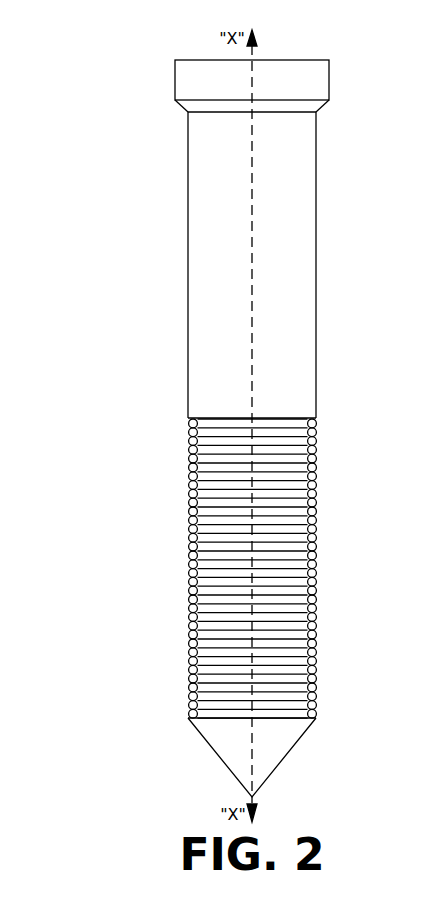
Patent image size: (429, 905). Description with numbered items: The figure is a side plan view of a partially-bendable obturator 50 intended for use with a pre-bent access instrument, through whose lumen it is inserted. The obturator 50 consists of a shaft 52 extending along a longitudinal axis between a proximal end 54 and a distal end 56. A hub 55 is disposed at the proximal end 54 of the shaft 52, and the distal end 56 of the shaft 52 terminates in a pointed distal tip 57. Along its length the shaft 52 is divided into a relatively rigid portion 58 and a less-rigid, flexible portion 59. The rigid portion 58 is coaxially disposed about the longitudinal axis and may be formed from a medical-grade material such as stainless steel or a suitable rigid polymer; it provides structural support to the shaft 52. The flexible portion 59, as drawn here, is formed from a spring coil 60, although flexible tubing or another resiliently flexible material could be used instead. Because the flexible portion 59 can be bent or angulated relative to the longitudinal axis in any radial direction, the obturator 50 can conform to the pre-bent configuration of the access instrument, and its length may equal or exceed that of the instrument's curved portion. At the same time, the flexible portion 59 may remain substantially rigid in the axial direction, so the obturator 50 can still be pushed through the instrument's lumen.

The obturator 50 is at (124, 68).
The shaft 52 is at (330, 328).
The proximal end 54 is at (316, 150).
The hub 55 is at (330, 80).
The distal end 56 is at (314, 718).
The pointed distal tip 57 is at (287, 757).
The rigid portion 58 is at (316, 243).
The flexible portion 59 is at (249, 569).
The spring coil 60 is at (318, 484).